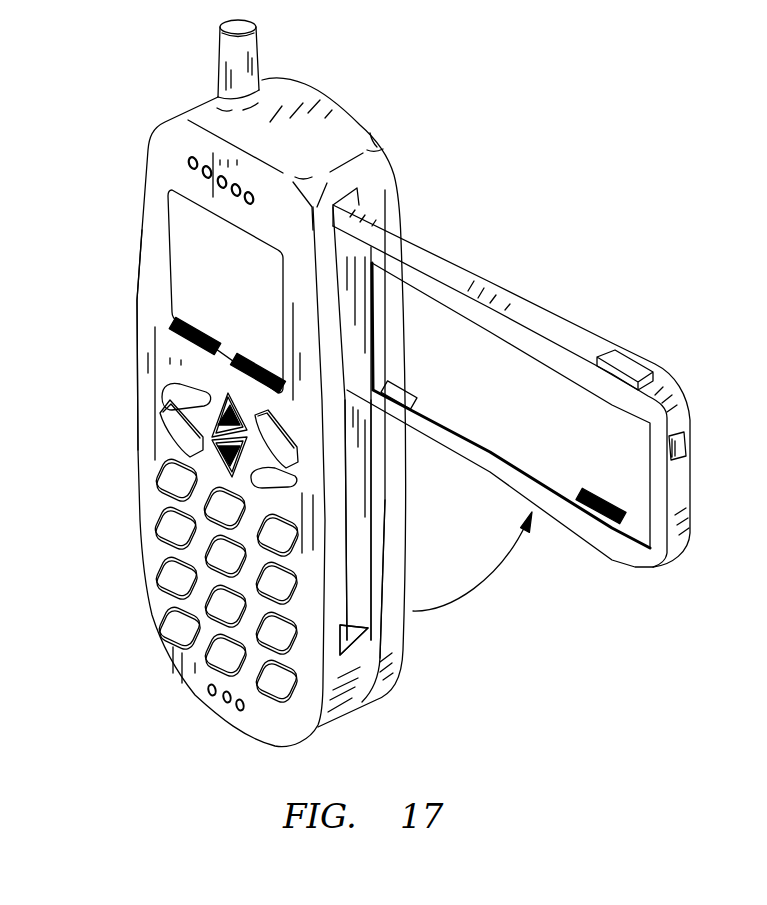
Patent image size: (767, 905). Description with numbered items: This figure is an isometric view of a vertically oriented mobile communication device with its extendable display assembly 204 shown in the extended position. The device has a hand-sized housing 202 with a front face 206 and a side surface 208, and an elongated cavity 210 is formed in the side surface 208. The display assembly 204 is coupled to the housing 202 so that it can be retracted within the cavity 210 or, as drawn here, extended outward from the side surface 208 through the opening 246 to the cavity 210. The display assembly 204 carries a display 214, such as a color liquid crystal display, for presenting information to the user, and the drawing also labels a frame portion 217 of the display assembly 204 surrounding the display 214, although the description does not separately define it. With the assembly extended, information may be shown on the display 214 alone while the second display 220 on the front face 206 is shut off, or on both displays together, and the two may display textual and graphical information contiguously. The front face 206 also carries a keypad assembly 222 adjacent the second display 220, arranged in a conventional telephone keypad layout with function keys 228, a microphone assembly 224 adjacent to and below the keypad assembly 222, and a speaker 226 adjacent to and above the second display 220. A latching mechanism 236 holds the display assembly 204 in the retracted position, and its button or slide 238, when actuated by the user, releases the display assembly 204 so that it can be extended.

The housing 202 is at (383, 178).
The extendable display assembly 204 is at (536, 370).
The front face 206 is at (155, 368).
The side surface 208 is at (393, 617).
The elongated cavity 210 is at (370, 627).
The display 214 is at (491, 369).
The display frame 217 is at (443, 262).
The second display 220 is at (197, 300).
The keypad assembly 222 is at (160, 565).
The microphone assembly 224 is at (222, 700).
The speaker 226 is at (196, 184).
The function keys 228 is at (160, 627).
The latching mechanism 236 is at (682, 437).
The button or slide 238 is at (623, 368).
The opening 246 is at (357, 553).